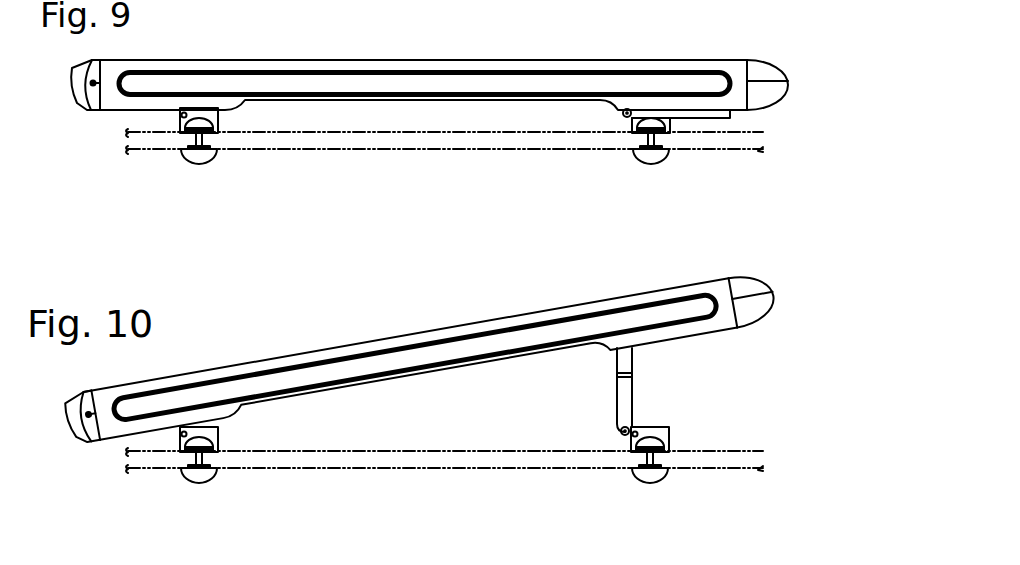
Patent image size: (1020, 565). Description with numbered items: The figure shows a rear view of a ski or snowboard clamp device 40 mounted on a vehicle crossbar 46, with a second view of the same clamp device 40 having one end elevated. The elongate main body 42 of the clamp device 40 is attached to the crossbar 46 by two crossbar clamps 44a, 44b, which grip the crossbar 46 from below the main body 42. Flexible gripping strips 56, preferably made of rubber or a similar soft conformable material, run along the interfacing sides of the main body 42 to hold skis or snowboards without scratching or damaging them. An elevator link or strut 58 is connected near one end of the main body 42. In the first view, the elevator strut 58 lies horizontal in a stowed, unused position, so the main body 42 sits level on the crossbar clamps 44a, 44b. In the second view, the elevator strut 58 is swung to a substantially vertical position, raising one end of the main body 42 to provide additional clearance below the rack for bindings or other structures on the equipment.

In FIG. 9, the clamp device 40 is at (398, 0).
In FIG. 10, the clamp device 40 is at (530, 290).
In FIG. 9, the main body 42 is at (763, 58).
In FIG. 10, the main body 42 is at (757, 275).
In FIG. 9, the crossbar clamp 44a is at (187, 163).
In FIG. 10, the crossbar clamp 44a is at (183, 483).
In FIG. 9, the crossbar clamp 44b is at (640, 162).
In FIG. 10, the crossbar clamp 44b is at (642, 482).
In FIG. 9, the crossbar 46 is at (290, 142).
In FIG. 10, the crossbar 46 is at (278, 460).
In FIG. 9, the gripping strips 56 is at (317, 83).
In FIG. 10, the gripping strips 56 is at (342, 375).
In FIG. 9, the elevator strut 58 is at (682, 112).
In FIG. 10, the elevator strut 58 is at (632, 393).